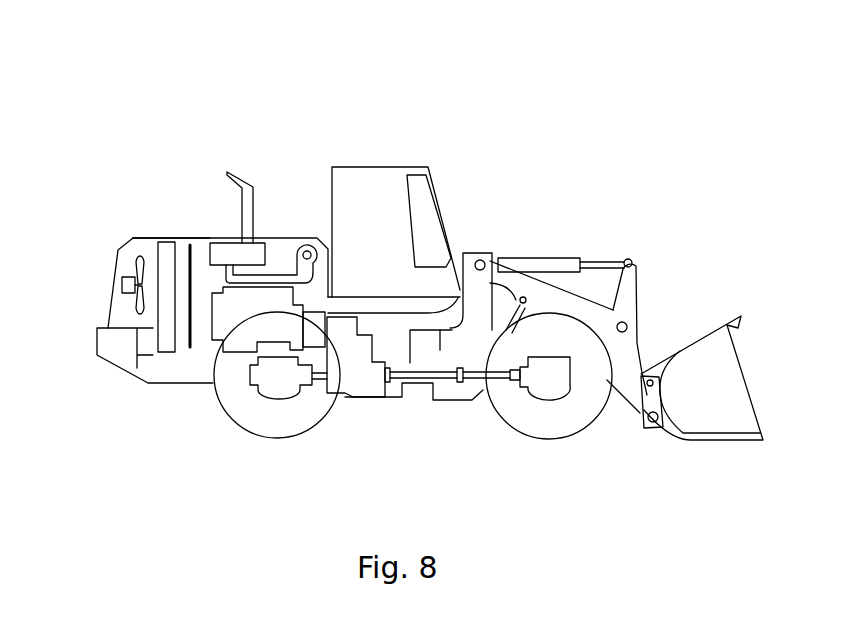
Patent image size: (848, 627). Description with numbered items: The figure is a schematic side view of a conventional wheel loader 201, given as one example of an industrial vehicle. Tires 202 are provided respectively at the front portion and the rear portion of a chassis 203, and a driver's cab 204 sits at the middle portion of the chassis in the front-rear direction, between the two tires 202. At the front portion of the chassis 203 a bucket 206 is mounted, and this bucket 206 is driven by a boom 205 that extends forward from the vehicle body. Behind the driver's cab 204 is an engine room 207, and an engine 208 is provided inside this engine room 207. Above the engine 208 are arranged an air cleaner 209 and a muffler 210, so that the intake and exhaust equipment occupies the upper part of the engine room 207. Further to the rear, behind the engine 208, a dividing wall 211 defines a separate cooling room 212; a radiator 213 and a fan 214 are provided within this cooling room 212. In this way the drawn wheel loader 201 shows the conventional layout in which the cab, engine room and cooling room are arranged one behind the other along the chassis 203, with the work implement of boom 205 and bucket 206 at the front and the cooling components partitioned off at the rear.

The wheel loader 201 is at (533, 102).
The tires 202 is at (282, 422).
The chassis 203 is at (458, 393).
The driver's cab 204 is at (373, 190).
The boom 205 is at (548, 300).
The bucket 206 is at (708, 363).
The engine room 207 is at (279, 255).
The engine 208 is at (235, 338).
The air cleaner 209 is at (296, 252).
The muffler 210 is at (228, 257).
The dividing wall 211 is at (187, 257).
The cooling room 212 is at (145, 241).
The radiator 213 is at (163, 338).
The fan 214 is at (140, 305).